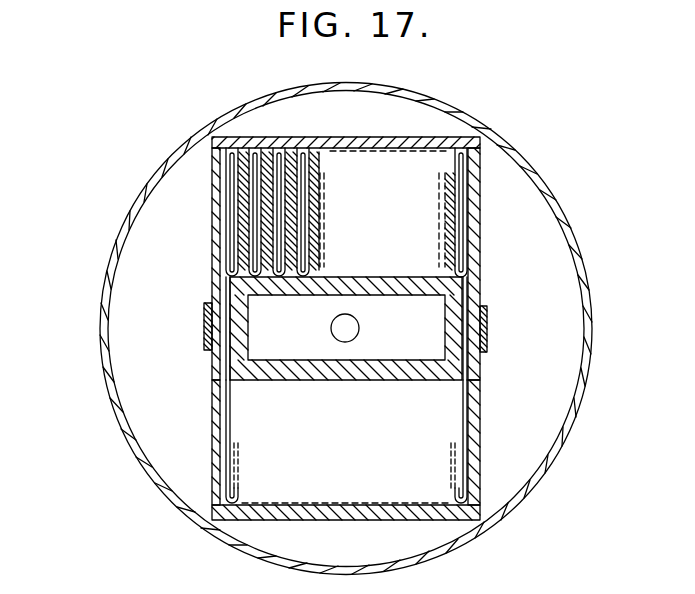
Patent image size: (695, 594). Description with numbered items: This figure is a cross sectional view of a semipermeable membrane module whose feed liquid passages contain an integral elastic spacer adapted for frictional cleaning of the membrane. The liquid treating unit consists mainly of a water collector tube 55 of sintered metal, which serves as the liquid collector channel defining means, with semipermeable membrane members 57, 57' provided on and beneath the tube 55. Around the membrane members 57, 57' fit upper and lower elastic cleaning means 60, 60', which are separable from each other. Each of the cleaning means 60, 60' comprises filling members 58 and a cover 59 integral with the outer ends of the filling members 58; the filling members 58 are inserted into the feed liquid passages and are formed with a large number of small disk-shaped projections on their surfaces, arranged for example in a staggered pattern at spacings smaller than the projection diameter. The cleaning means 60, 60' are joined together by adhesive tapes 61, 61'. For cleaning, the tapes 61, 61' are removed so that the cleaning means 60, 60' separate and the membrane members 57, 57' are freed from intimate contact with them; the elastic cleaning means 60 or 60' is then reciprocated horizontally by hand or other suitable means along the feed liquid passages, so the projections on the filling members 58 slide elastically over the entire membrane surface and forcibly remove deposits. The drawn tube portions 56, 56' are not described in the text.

The water collector tube 55 is at (453, 372).
The heat transfer tube 56 is at (403, 217).
The lower heat transfer tube 56' is at (175, 468).
The semipermeable membrane member 57 is at (264, 215).
The semipermeable membrane member 57' is at (514, 474).
The filling members 58 is at (263, 138).
The cover 59 is at (212, 132).
The upper elastic cleaning means 60 is at (385, 231).
The lower elastic cleaning means 60' is at (257, 450).
The adhesive tape 61 is at (123, 309).
The adhesive tape 61' is at (569, 298).